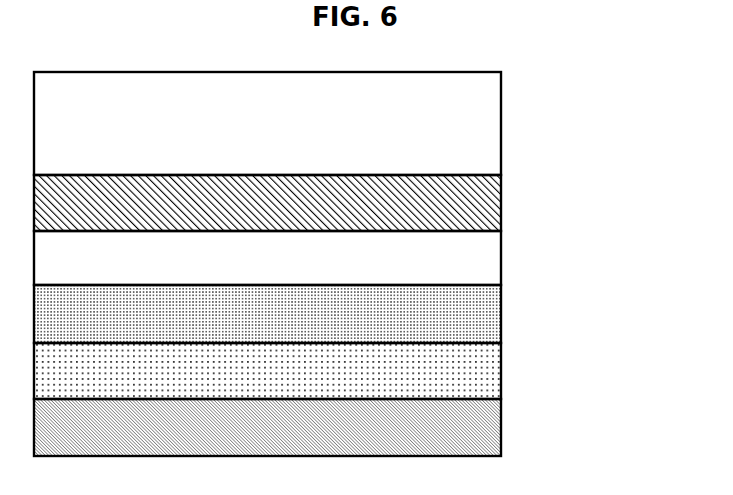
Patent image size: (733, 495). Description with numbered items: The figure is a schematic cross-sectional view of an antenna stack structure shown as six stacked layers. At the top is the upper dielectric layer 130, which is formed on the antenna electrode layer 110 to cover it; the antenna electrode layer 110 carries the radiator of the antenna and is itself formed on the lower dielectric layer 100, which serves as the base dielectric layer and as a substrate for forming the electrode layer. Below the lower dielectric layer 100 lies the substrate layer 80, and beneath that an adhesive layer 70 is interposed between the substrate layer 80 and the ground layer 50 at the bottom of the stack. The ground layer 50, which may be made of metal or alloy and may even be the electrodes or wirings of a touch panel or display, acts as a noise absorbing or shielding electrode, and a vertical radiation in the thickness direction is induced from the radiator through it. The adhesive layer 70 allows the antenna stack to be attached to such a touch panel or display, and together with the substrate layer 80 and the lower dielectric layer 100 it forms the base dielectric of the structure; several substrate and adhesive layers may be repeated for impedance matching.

The upper dielectric layer 130 is at (494, 115).
The antenna electrode layer 110 is at (500, 197).
The lower dielectric layer 100 is at (492, 263).
The substrate layer 80 is at (500, 316).
The adhesive layer 70 is at (493, 375).
The ground layer 50 is at (493, 430).